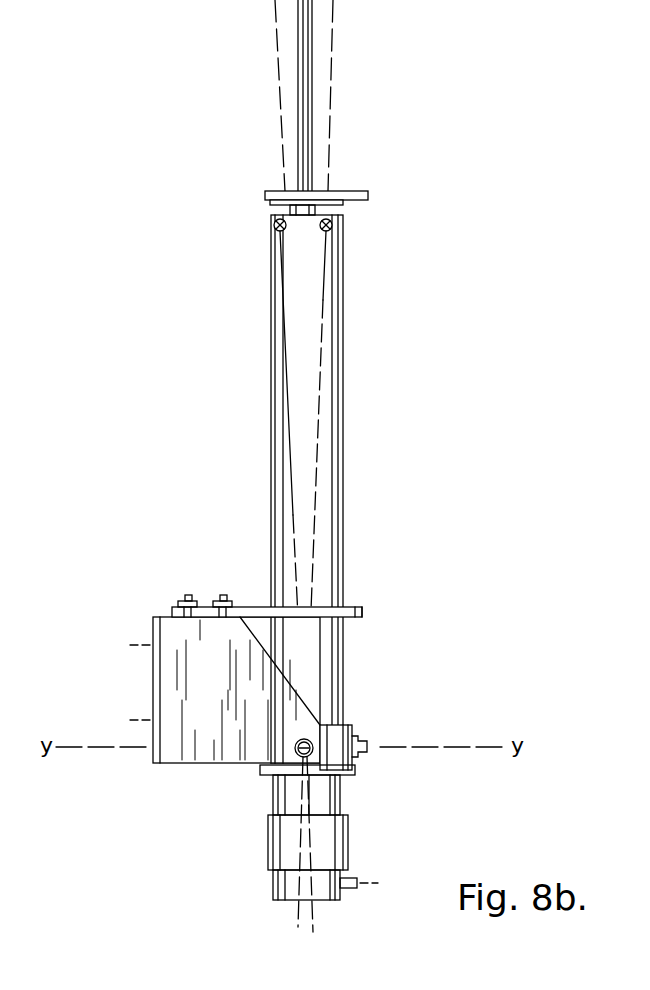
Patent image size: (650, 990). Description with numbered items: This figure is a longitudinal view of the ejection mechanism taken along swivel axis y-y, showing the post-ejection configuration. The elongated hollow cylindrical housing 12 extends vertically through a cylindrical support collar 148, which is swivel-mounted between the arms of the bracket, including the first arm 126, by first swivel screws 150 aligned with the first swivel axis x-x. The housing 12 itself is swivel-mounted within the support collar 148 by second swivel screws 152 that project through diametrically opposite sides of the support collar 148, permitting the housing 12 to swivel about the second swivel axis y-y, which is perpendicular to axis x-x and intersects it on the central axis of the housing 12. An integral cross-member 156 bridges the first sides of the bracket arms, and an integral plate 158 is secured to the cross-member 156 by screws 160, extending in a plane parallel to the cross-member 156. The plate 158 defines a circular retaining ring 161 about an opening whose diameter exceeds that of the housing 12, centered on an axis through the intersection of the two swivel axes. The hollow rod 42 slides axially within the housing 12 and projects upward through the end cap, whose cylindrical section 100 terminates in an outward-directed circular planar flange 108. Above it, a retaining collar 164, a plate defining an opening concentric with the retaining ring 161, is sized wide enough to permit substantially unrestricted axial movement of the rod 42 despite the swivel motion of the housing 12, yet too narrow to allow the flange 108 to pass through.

The rod 42 is at (312, 31).
The retaining collar 164 is at (368, 192).
The outward-directed circular planar flange 108 is at (322, 204).
The cylindrical section 100 is at (289, 210).
The housing 12 is at (341, 411).
The cross-member 156 is at (167, 620).
The plate 158 is at (254, 606).
The screws 160 is at (222, 596).
The retaining ring 161 is at (353, 606).
The support collar 148 is at (347, 724).
The second swivel screws 152 is at (367, 742).
The first swivel screws 150 is at (290, 730).
The first arm 126 is at (168, 757).